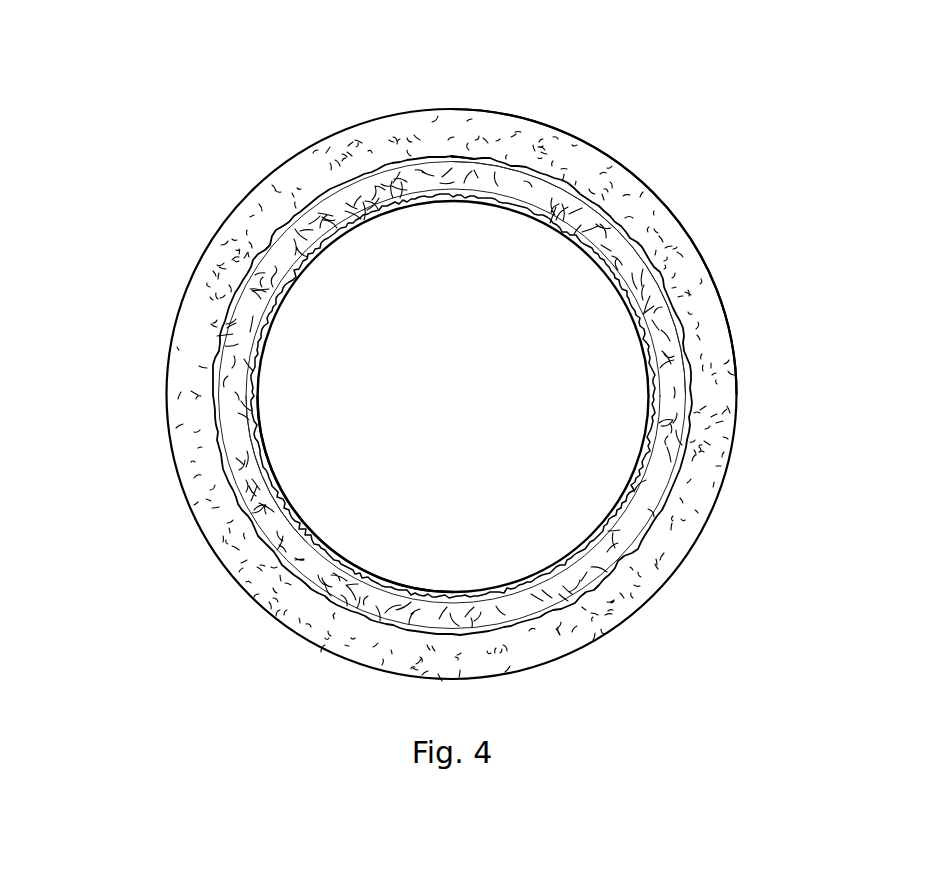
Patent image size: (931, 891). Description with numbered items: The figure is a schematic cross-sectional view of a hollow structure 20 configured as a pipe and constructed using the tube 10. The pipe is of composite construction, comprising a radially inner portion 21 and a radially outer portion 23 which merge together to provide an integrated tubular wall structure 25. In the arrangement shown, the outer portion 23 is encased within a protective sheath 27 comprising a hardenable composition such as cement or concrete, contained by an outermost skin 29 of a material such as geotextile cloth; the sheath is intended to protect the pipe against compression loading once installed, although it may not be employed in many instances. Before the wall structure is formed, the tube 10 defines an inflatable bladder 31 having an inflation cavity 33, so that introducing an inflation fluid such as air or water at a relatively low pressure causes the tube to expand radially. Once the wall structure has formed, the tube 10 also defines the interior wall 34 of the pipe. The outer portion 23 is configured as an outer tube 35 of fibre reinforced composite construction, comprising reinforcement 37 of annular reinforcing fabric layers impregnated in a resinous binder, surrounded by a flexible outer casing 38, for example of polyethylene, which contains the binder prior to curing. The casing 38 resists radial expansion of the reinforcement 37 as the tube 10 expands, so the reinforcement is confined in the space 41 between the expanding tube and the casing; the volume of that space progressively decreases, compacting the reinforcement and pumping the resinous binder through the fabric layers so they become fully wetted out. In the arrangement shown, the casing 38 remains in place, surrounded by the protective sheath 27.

The tube 10 is at (623, 498).
The hollow structure 20 is at (243, 190).
The radially inner portion 21 is at (648, 453).
The radially outer portion 23 is at (576, 200).
The integrated tubular wall structure 25 is at (450, 158).
The protective sheath 27 is at (655, 582).
The outermost skin 29 is at (585, 647).
The inflatable bladder 31 is at (313, 545).
The inflation cavity 33 is at (408, 553).
The interior wall 34 is at (310, 545).
The outer tube 35 is at (235, 370).
The reinforcement 37 is at (623, 257).
The flexible outer casing 38 is at (675, 298).
The space 41 is at (672, 353).